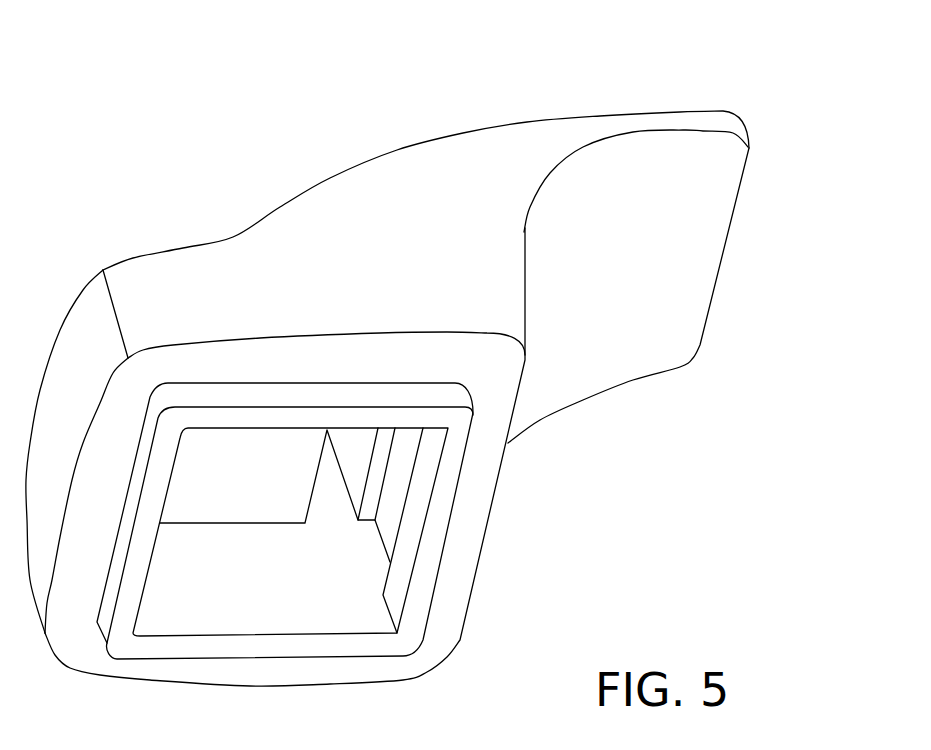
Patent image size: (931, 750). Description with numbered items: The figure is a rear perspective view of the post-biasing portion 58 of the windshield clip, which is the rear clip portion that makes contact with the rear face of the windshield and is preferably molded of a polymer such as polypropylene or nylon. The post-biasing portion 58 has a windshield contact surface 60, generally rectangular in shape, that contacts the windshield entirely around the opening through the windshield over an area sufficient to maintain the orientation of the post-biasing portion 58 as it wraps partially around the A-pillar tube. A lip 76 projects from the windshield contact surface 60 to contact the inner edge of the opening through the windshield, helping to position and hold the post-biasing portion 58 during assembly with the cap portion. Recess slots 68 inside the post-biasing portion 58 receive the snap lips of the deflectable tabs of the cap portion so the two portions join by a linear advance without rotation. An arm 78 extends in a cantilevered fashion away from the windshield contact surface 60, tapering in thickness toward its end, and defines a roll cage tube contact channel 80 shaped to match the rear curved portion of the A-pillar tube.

The post-biasing portion 58 is at (362, 117).
The windshield contact surface 60 is at (455, 598).
The recess slot 68 is at (373, 547).
The lip 76 is at (427, 560).
The arm 78 is at (527, 148).
The roll cage tube contact channel 80 is at (587, 260).